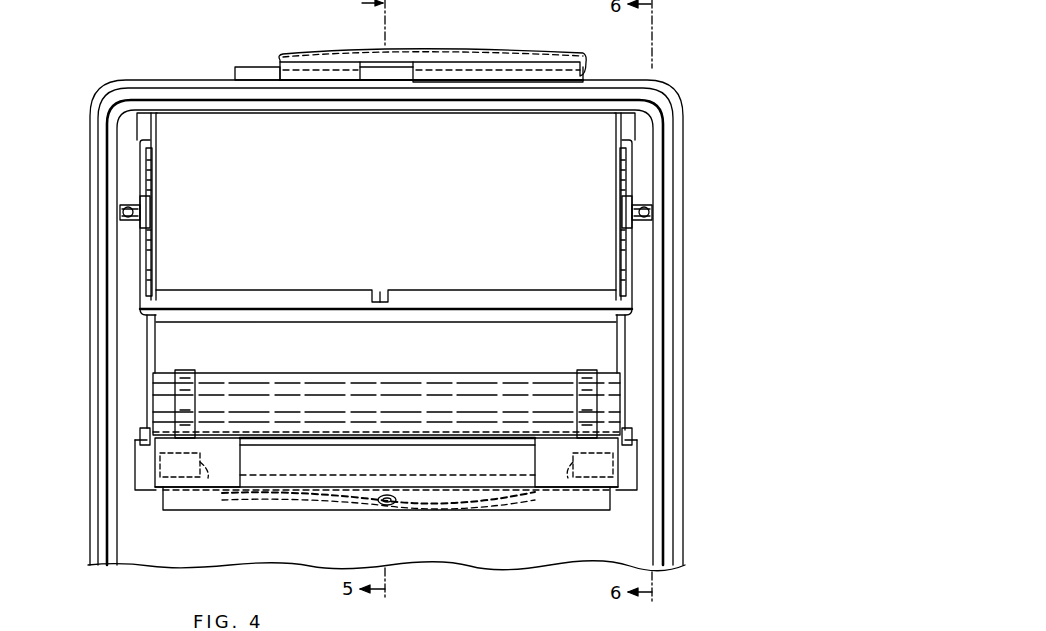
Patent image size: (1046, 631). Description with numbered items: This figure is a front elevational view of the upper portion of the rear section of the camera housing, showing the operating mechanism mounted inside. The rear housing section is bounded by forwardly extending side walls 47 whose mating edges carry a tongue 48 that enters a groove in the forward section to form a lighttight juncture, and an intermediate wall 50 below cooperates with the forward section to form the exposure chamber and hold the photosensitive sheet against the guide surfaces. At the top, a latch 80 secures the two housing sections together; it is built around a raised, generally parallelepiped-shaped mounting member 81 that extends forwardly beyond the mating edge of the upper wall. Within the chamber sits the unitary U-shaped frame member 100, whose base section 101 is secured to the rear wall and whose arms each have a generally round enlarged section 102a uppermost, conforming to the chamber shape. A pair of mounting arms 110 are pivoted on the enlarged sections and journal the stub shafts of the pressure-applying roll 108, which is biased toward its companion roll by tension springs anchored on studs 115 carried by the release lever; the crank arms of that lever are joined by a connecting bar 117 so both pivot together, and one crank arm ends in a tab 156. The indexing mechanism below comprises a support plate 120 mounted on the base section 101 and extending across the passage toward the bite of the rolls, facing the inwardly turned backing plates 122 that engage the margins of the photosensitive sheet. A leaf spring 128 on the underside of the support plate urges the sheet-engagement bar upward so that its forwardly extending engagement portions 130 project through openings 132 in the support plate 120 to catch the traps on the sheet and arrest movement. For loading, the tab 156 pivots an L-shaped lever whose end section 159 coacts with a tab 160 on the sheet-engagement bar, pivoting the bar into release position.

The side wall 47 is at (88, 292).
The tongue 48 is at (174, 90).
The intermediate wall 50 is at (225, 560).
The latch 80 is at (481, 42).
The mounting member 81 is at (248, 67).
The frame member 100 is at (145, 360).
The base section 101 is at (262, 300).
The enlarged section 102a is at (158, 225).
The pressure-applying roll 108 is at (415, 378).
The mounting arm 110 is at (148, 347).
The stud 115 is at (125, 212).
The connecting bar 117 is at (504, 308).
The support plate 120 is at (348, 456).
The backing plate 122 is at (238, 464).
The leaf spring 128 is at (470, 500).
The engagement portion 130 is at (180, 465).
The opening 132 is at (213, 462).
The tab 156 is at (140, 136).
The end section 159 is at (637, 450).
The tab 160 is at (637, 468).